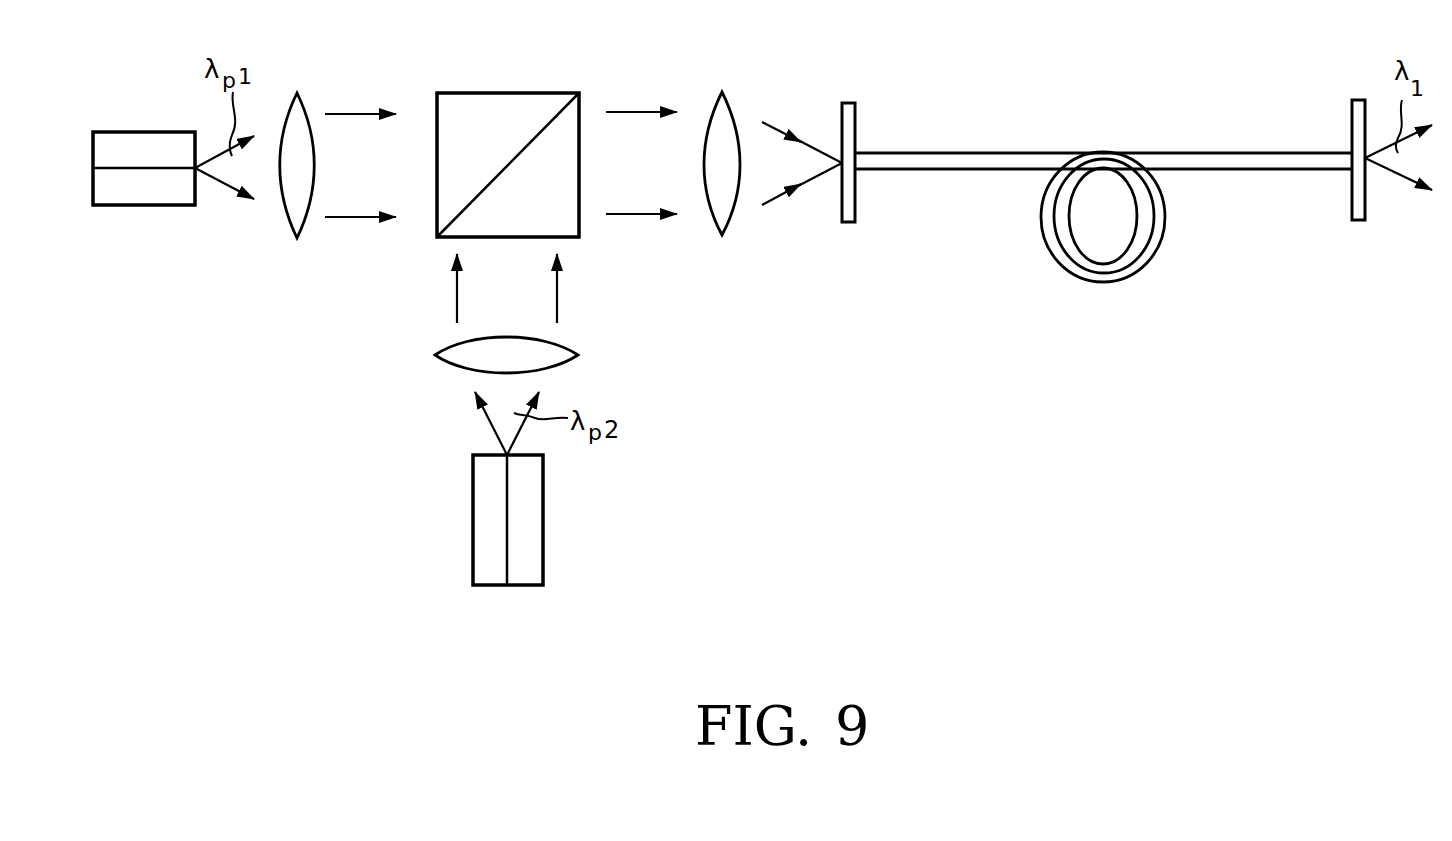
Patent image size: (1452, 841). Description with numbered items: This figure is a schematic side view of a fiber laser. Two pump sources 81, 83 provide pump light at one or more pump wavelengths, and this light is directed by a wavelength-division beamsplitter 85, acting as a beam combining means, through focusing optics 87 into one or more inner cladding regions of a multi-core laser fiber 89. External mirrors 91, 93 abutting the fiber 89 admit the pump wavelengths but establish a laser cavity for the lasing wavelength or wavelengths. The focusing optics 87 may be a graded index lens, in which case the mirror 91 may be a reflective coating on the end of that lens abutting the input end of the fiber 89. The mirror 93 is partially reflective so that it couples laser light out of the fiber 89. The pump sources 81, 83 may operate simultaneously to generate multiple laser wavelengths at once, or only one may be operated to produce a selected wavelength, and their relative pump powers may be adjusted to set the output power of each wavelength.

The pump source 81 is at (138, 132).
The pump source 83 is at (473, 520).
The wavelength-division beamsplitter 85 is at (511, 93).
The focusing optics 87 is at (726, 92).
The multi-core laser fiber 89 is at (1056, 153).
The mirror 91 is at (847, 103).
The mirror 93 is at (1355, 100).